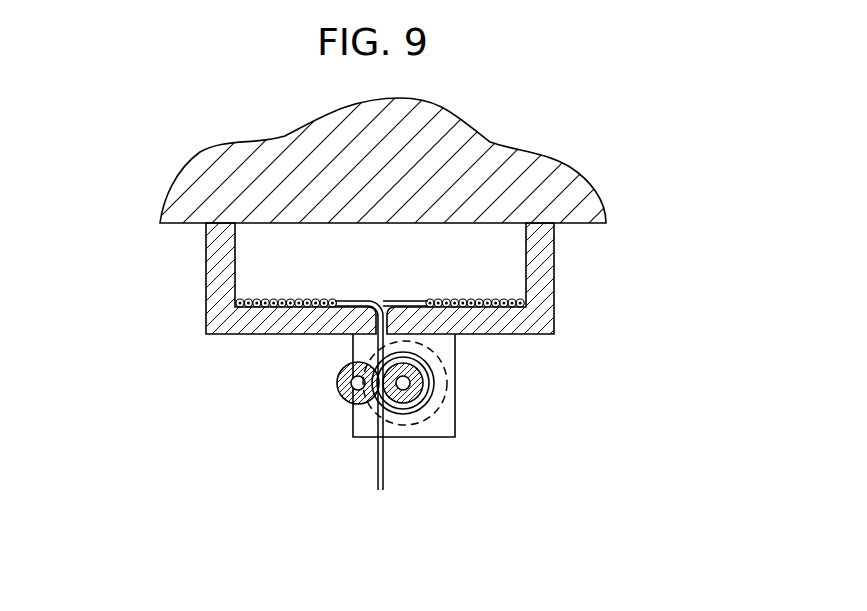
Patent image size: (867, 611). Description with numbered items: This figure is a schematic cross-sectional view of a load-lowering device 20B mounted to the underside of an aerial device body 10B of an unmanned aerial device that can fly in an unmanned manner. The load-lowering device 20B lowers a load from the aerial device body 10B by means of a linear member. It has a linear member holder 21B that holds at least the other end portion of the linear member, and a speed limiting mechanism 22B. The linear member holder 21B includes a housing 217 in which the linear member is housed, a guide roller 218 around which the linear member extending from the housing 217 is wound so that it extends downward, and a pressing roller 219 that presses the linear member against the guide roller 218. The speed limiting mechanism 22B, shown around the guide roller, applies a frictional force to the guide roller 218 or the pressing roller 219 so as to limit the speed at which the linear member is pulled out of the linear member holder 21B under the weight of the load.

The aerial device body 10B is at (190, 170).
The load-lowering device 20B is at (429, 356).
The linear member holder 21B is at (205, 282).
The housing 217 is at (554, 307).
The guide roller 218 is at (435, 383).
The pressing roller 219 is at (337, 385).
The speed limiting mechanism 22B is at (445, 407).